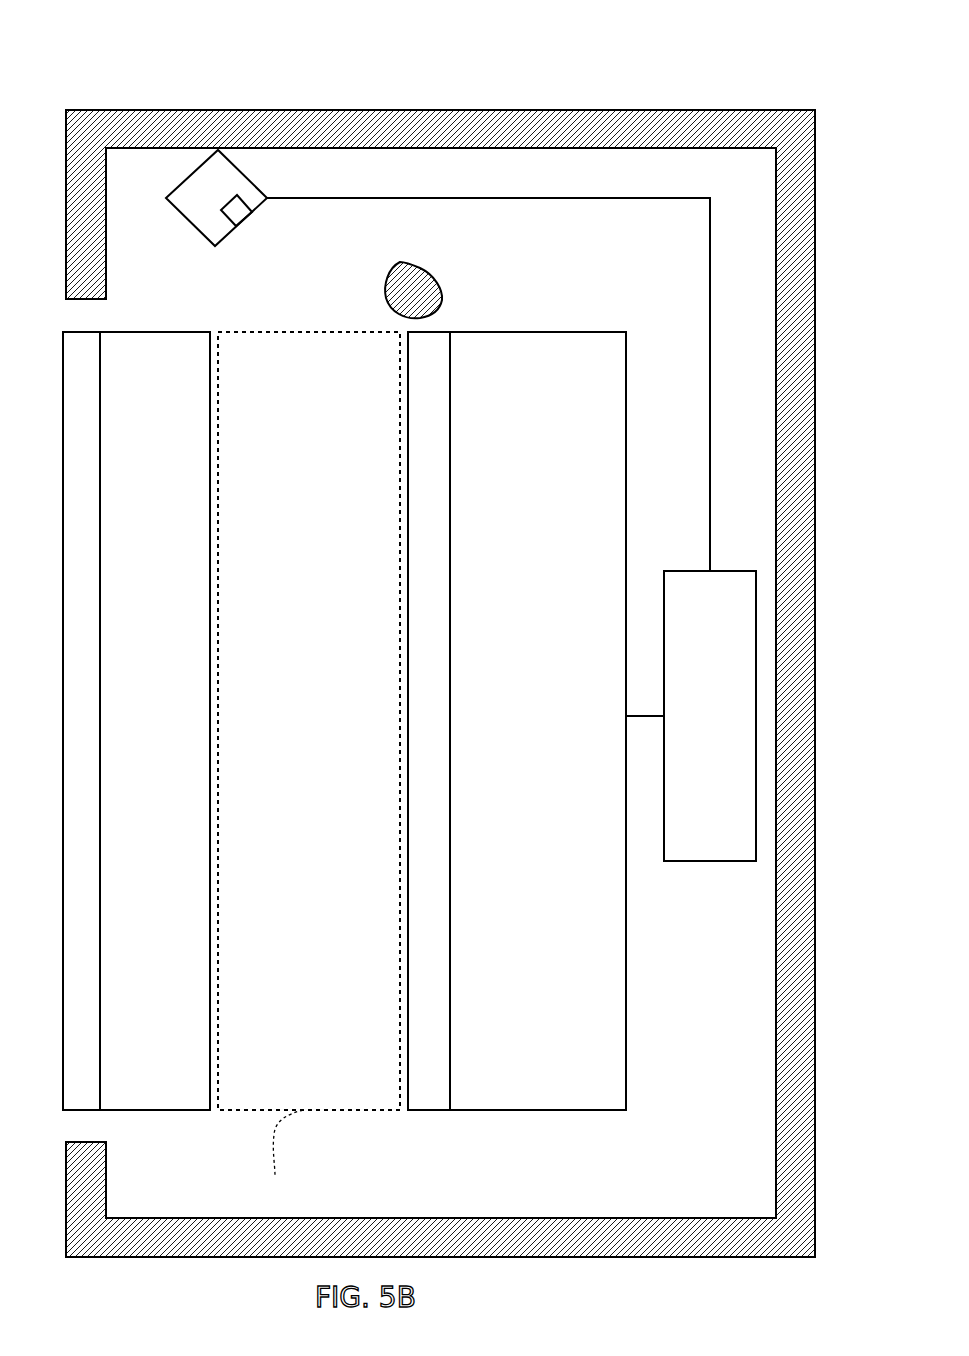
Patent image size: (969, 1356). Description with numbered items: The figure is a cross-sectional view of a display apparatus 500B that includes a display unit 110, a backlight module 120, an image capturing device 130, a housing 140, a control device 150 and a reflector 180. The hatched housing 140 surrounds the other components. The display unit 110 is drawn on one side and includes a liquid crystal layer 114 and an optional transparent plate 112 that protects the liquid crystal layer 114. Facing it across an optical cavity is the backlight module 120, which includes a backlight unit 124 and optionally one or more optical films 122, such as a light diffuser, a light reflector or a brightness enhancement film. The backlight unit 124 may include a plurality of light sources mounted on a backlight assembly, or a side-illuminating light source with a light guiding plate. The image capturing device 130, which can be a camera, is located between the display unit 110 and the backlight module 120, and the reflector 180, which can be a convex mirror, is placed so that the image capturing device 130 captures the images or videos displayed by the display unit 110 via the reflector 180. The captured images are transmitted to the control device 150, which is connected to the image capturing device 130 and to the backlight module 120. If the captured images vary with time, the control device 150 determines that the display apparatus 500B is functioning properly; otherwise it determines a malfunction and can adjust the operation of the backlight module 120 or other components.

The display apparatus 500B is at (860, 37).
The display unit 110 is at (137, 60).
The transparent plate 112 is at (66, 362).
The liquid crystal layer 114 is at (147, 332).
The backlight module 120 is at (628, 260).
The optical films 122 is at (437, 332).
The backlight unit 124 is at (522, 332).
The image capturing device 130 is at (201, 165).
The housing 140 is at (817, 223).
The control device 150 is at (712, 862).
The reflector 180 is at (400, 262).